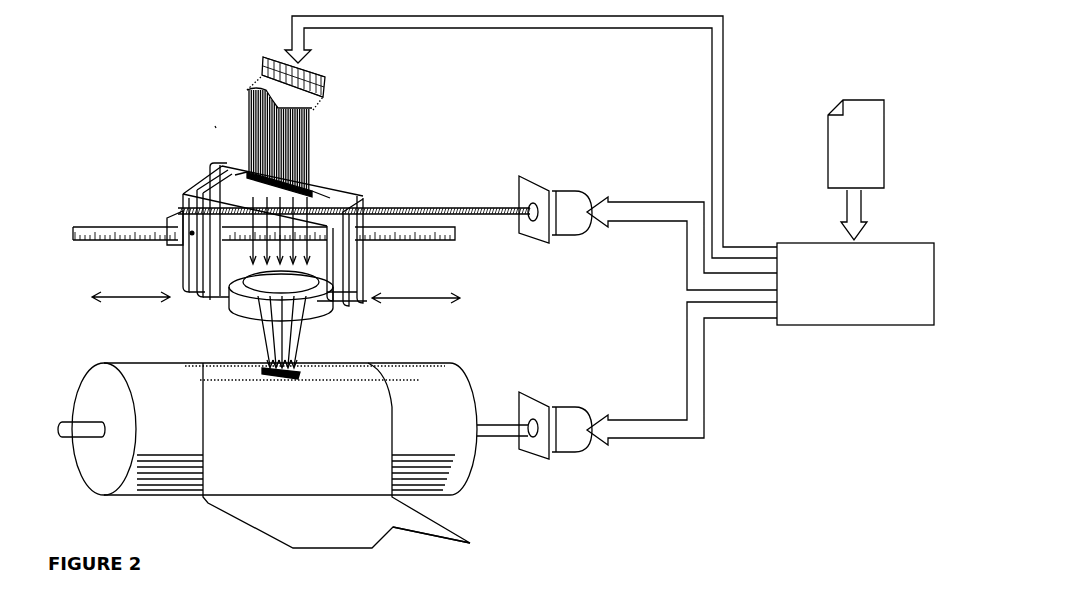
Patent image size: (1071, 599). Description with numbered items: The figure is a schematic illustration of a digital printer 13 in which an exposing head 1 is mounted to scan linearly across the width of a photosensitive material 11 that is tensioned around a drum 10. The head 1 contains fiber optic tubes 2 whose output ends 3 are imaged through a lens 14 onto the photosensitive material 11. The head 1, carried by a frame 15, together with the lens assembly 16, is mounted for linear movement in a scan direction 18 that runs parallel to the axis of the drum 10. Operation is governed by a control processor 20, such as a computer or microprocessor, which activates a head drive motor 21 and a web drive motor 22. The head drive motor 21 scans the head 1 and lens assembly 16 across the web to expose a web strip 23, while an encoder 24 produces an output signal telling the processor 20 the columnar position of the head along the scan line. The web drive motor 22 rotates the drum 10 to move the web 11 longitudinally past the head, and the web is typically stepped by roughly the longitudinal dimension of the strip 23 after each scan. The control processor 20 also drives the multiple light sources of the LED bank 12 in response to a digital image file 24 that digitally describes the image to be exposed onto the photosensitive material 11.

The head 1 is at (212, 125).
The fiber optic tubes 2 is at (330, 151).
The output ends 3 is at (310, 171).
The drum 10 is at (267, 429).
The photosensitive material 11 is at (336, 455).
The LED bank 12 is at (324, 103).
The printer 13 is at (141, 164).
The lens 14 is at (311, 276).
The frame 15 is at (208, 188).
The lens assembly 16 is at (217, 297).
The scan direction 18 is at (416, 310).
The control processor 20 is at (851, 330).
The head drive motor 21 is at (567, 188).
The web drive motor 22 is at (567, 406).
The web strip 23 is at (221, 370).
The encoder / digital image file 24 is at (160, 216).